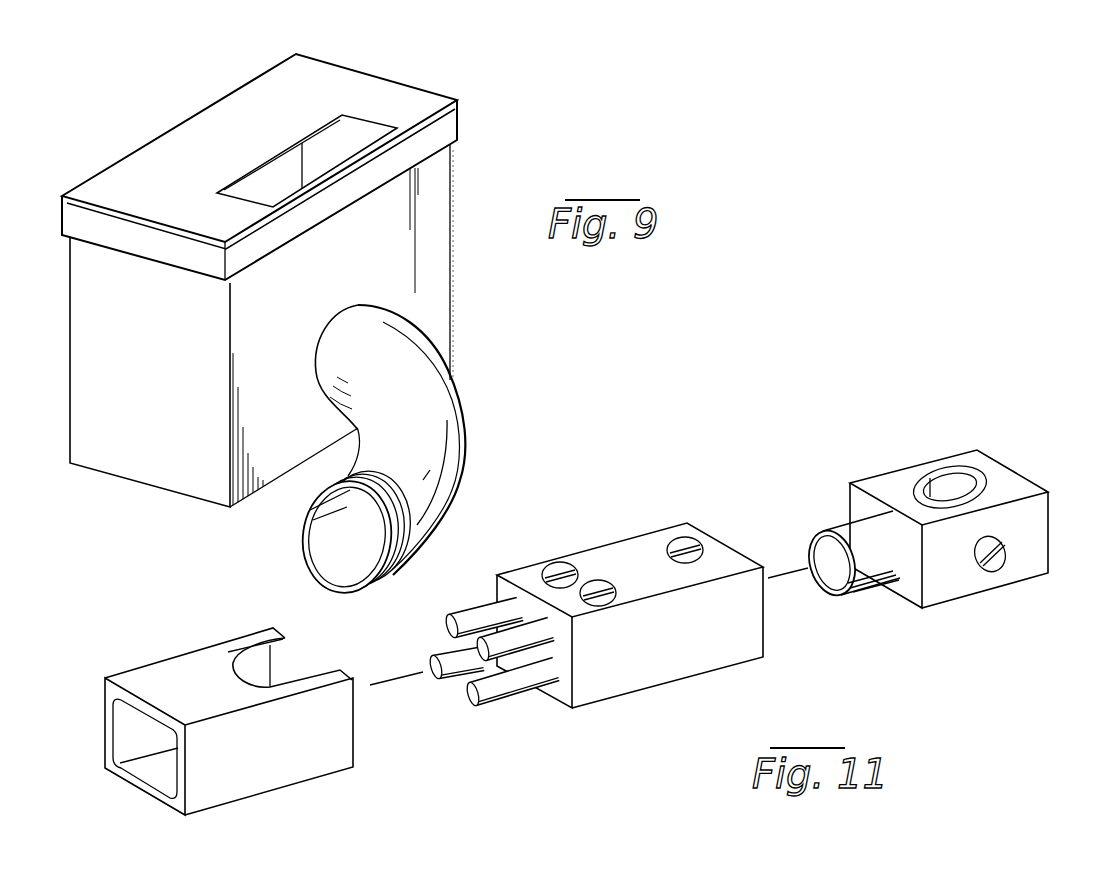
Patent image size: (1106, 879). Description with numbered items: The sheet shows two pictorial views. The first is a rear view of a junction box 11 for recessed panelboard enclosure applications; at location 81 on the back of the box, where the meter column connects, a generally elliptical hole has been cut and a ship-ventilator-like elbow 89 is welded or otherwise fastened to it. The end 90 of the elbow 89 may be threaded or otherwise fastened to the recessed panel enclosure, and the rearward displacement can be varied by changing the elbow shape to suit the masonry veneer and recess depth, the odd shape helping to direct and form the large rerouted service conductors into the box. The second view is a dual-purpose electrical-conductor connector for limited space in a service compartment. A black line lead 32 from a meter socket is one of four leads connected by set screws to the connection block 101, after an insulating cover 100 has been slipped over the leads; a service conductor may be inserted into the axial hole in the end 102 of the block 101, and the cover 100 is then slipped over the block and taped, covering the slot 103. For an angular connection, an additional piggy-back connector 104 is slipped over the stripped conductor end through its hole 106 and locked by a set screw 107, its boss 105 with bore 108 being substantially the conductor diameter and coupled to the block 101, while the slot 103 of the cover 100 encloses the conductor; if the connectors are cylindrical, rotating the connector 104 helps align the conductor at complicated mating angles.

In FIG. 9, the housing assembly 11 is at (473, 108).
In FIG. 9, the location 81 is at (268, 163).
In FIG. 9, the elbow 89 is at (440, 458).
In FIG. 9, the end of elbow 90 is at (345, 517).
In FIG. 11, the black line lead 32 is at (450, 695).
In FIG. 11, the insulating cover 100 is at (252, 798).
In FIG. 11, the line lug 101 is at (640, 690).
In FIG. 11, the end of connector 102 is at (700, 526).
In FIG. 11, the slot 103 is at (286, 636).
In FIG. 11, the additional connector 104 is at (940, 612).
In FIG. 11, the bushing 105 is at (825, 533).
In FIG. 11, the hole 106 is at (943, 473).
In FIG. 11, the set screw 107 is at (995, 558).
In FIG. 11, the bore 108 is at (872, 590).